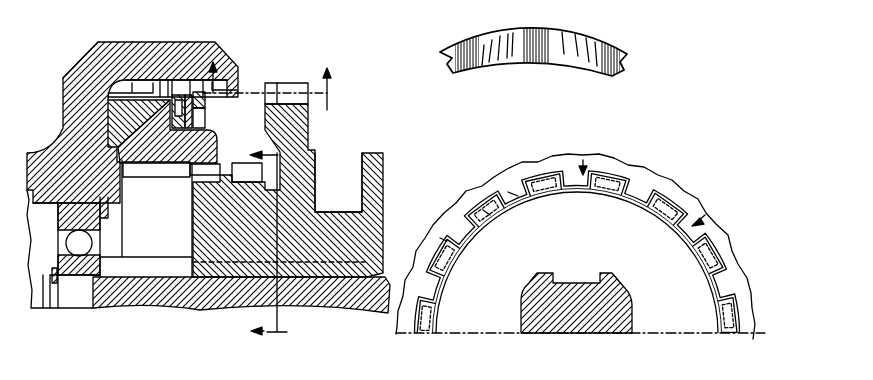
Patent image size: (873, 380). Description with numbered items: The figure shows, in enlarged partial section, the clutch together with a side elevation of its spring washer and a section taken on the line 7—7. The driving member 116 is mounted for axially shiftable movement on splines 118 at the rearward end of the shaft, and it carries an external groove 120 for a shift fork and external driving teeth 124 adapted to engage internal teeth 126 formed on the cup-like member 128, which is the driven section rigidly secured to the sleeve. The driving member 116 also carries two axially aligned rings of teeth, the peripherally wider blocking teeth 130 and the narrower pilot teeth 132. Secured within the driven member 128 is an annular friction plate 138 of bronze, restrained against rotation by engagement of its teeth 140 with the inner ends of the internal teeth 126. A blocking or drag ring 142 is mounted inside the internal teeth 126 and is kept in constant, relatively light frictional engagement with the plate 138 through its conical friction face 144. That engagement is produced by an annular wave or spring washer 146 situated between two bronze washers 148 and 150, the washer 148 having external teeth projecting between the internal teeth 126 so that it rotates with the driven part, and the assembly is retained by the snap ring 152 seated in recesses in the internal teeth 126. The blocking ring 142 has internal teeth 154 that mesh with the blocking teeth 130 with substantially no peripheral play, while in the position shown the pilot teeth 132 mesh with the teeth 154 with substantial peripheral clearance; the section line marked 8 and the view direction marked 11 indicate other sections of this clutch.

In FIG. 6, the driving member 116 is at (386, 222).
In FIG. 7, the driving member 116 is at (432, 190).
In FIG. 6, the splines 118 is at (160, 292).
In FIG. 7, the splines 118 is at (558, 273).
In FIG. 6, the external groove 120 is at (338, 182).
In FIG. 6, the external driving teeth 124 is at (282, 90).
In FIG. 6, the internal teeth 126 is at (200, 80).
In FIG. 6, the cup-like member 128 is at (72, 143).
In FIG. 6, the blocking teeth 130 is at (266, 182).
In FIG. 7, the blocking teeth 130 is at (440, 235).
In FIG. 6, the pilot teeth 132 is at (192, 200).
In FIG. 7, the pilot teeth 132 is at (484, 208).
In FIG. 6, the annular friction plate 138 is at (68, 72).
In FIG. 6, the teeth 140 is at (110, 77).
In FIG. 6, the blocking ring 142 is at (152, 80).
In FIG. 7, the blocking ring 142 is at (645, 175).
In FIG. 6, the friction face 144 is at (436, 190).
In FIG. 6, the spring washer 146 is at (205, 128).
In FIG. 6A, the spring washer 146 is at (627, 56).
In FIG. 6, the bronze washer 148 is at (176, 94).
In FIG. 6, the bronze washer 150 is at (190, 92).
In FIG. 6, the snap ring 152 is at (207, 104).
In FIG. 6, the internal teeth 154 is at (192, 182).
In FIG. 7, the internal teeth 154 is at (513, 190).
In FIG. 6, the section line 7- 7 is at (261, 244).
In FIG. 7, the section line 8- 8 is at (639, 196).
In FIG. 6, the section line 11- 11 is at (268, 99).